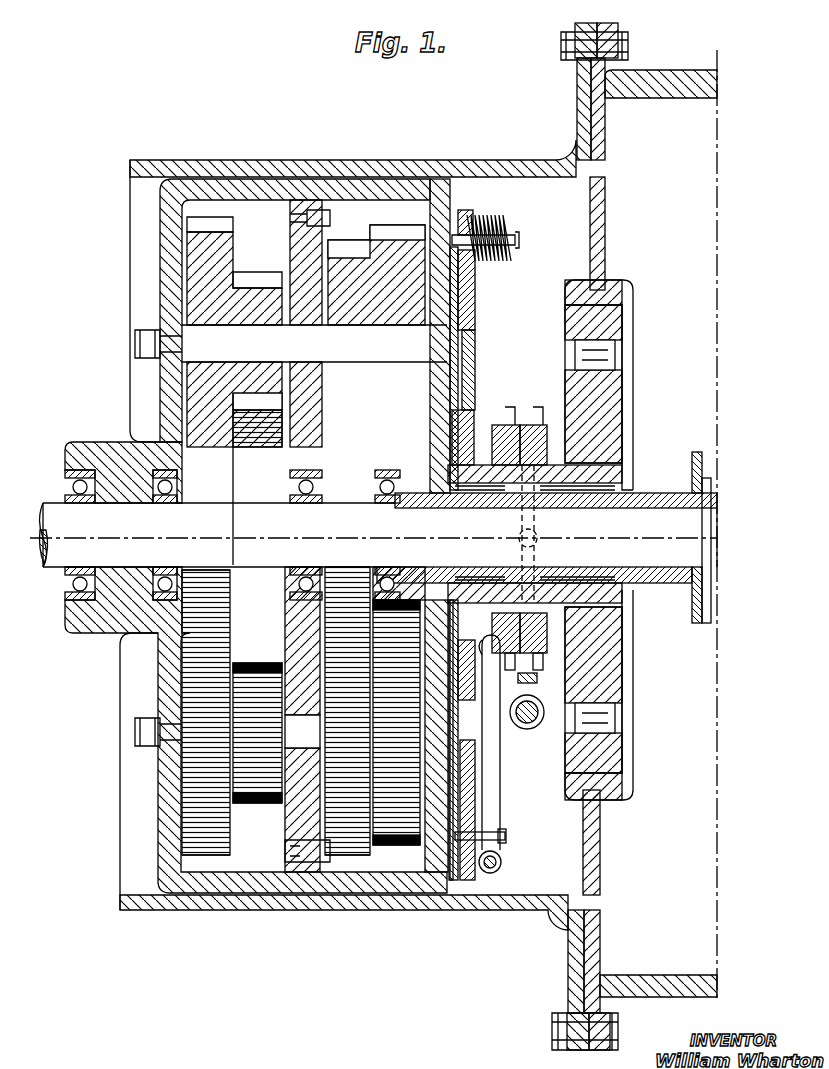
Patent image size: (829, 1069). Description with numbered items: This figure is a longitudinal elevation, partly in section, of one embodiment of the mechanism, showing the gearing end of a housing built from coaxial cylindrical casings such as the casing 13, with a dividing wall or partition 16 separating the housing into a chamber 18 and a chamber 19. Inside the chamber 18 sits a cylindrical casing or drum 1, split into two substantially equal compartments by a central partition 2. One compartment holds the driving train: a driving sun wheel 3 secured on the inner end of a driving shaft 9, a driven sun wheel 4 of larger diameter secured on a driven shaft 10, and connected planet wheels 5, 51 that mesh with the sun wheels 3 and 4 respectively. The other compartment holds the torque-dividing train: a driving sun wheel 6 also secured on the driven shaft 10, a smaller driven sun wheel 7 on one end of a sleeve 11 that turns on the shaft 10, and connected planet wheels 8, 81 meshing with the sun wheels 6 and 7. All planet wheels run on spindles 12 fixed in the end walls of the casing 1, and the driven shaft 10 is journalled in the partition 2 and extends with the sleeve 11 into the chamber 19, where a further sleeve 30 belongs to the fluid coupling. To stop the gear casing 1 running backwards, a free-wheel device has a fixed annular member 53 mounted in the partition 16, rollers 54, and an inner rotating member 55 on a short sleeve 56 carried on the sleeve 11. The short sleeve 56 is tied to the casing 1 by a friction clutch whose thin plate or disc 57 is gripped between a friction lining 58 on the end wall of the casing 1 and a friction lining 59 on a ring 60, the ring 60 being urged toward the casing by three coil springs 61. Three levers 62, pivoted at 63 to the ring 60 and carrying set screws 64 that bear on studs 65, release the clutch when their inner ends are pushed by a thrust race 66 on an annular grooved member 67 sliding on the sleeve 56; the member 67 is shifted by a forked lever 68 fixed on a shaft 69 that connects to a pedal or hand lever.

The cylindrical casing or drum 1 is at (200, 195).
The central partition 2 is at (302, 250).
The driving sun wheel 3 is at (180, 585).
The driven sun wheel 4 is at (258, 445).
The planet wheel 5 is at (213, 390).
The driving sun wheel 6 is at (345, 610).
The driven sun wheel 7 is at (398, 452).
The planet wheel 8 is at (388, 285).
The planet wheel 81 is at (465, 292).
The driving shaft 9 is at (118, 553).
The driven shaft 10 is at (636, 525).
The sleeve 11 is at (668, 497).
The spindle 12 is at (205, 345).
The cylindrical casing 13 is at (362, 172).
The dividing wall or partition 16 is at (598, 232).
The chamber 18 is at (565, 235).
The chamber 19 is at (653, 140).
The sleeve 30 is at (662, 575).
The planet wheel 51 is at (250, 300).
The fixed annular member 53 is at (600, 300).
The rollers 54 is at (600, 352).
The inner rotating member 55 is at (590, 395).
The short sleeve 56 is at (566, 475).
The thin plate or disc 57 is at (466, 340).
The friction lining 58 is at (476, 285).
The friction lining 59 is at (472, 305).
The ring 60 is at (468, 320).
The coil spring 61 is at (493, 225).
The lever 62 is at (492, 810).
The pivot 63 is at (503, 864).
The set screw 64 is at (505, 835).
The stud 65 is at (450, 890).
The thrust race 66 is at (498, 430).
The annular grooved member 67 is at (527, 425).
The forked lever 68 is at (540, 677).
The shaft 69 is at (540, 725).